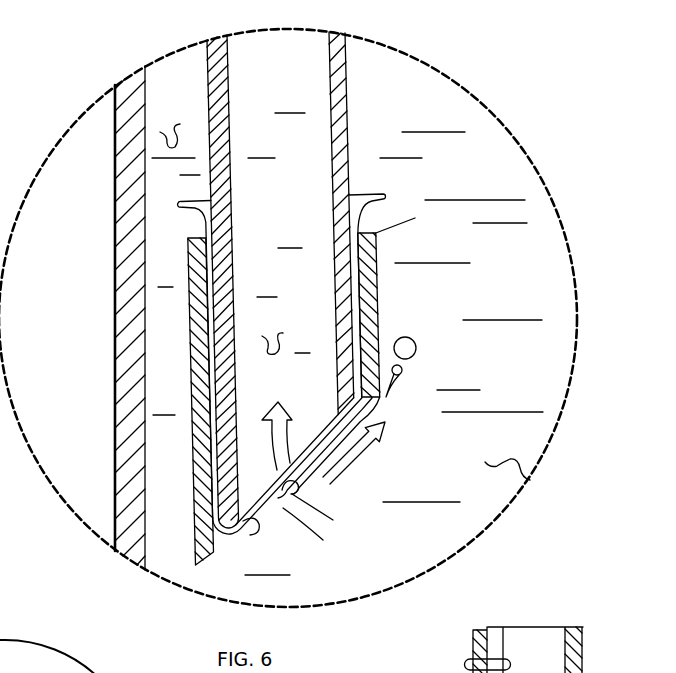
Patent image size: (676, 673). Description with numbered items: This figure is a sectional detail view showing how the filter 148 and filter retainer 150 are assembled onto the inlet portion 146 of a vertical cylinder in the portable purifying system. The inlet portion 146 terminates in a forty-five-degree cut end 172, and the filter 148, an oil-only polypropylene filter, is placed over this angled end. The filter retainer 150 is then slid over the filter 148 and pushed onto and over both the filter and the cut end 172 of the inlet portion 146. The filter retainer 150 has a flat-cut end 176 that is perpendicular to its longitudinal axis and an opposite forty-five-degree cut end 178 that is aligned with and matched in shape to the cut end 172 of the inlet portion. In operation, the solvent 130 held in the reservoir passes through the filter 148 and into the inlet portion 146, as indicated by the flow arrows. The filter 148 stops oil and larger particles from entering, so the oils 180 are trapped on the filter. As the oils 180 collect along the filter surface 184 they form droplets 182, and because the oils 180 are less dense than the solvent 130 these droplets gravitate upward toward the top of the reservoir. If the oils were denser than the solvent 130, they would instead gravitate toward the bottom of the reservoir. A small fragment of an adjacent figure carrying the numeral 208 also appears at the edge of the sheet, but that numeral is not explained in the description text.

The solvent 130 is at (160, 132).
The inlet portion 146 is at (345, 67).
The filter 148 is at (385, 195).
The filter retainer 150 is at (378, 294).
The forty-five-degree cut end 172 is at (343, 409).
The flat-cut end 176 is at (415, 218).
The forty-five-degree cut end 178 is at (208, 563).
The oils 180 is at (387, 398).
The droplets 182 is at (416, 348).
The filter surface 184 is at (258, 509).
The pin 208 is at (470, 665).